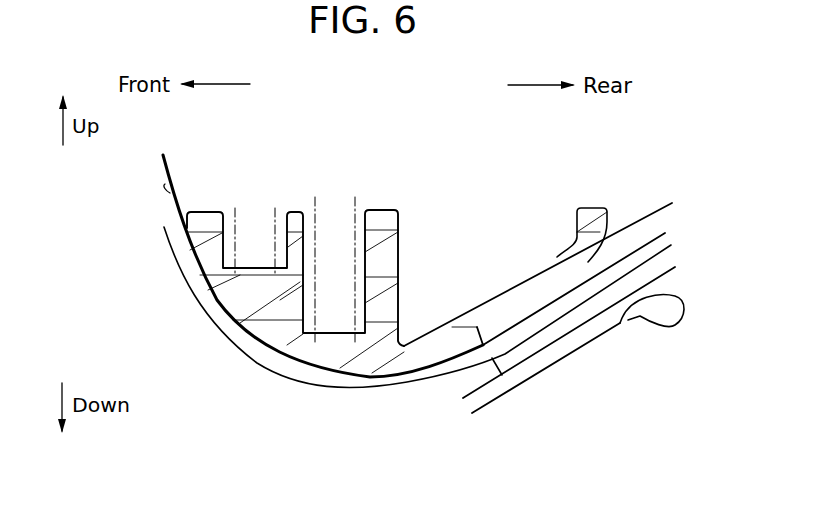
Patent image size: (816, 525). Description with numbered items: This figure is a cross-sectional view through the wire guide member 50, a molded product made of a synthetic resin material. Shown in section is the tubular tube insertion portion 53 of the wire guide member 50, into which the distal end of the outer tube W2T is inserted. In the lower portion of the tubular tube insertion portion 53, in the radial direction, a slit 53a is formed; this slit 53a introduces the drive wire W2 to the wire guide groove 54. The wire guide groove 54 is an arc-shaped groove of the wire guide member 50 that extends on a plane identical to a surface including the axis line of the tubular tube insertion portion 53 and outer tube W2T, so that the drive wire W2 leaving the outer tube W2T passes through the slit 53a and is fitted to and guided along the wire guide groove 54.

The wire guide member 50 is at (432, 259).
The tubular tube insertion portion 53 is at (513, 290).
The slit 53a is at (558, 346).
The wire guide groove 54 is at (357, 377).
The drive wire W2 is at (409, 382).
The outer tube W2T is at (617, 300).